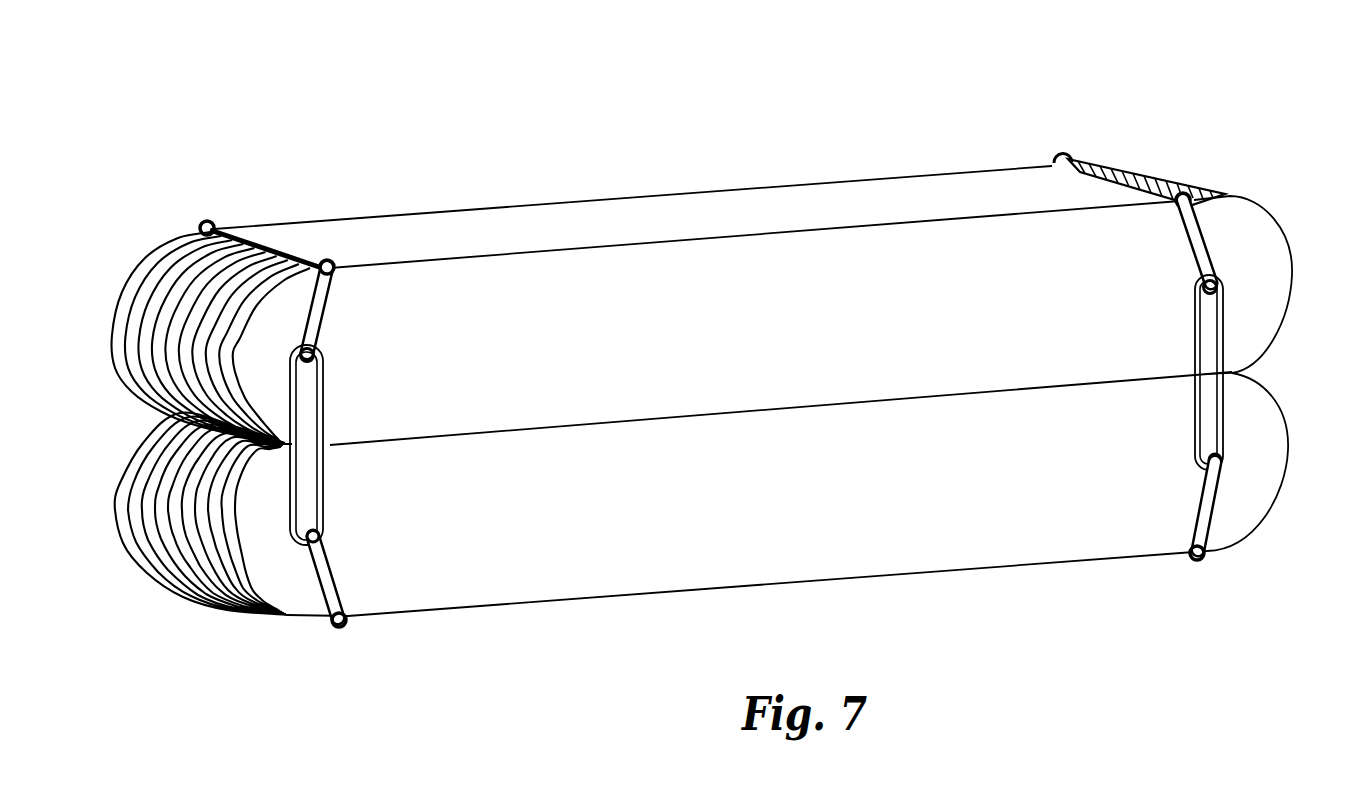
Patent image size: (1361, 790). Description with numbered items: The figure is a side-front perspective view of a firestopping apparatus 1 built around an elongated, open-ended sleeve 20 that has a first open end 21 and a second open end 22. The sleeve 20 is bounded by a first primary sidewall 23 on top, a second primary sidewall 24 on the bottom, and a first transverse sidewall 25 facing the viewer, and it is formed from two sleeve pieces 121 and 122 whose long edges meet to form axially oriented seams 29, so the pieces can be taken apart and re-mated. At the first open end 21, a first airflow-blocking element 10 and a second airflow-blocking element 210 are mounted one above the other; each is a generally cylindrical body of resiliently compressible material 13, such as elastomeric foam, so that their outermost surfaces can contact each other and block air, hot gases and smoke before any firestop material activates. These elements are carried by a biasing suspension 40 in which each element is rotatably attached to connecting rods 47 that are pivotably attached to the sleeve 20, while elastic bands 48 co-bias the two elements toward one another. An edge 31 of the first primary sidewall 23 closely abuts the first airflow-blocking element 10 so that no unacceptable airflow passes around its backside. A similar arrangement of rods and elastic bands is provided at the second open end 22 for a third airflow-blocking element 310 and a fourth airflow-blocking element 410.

The firestopping apparatus 1 is at (1158, 86).
The first airflow-blocking element 10 is at (182, 333).
The resiliently compressible material 13 is at (113, 328).
The sleeve 20 is at (780, 371).
The first open end 21 is at (202, 543).
The second open end 22 is at (1288, 360).
The first primary sidewall 23 is at (876, 195).
The second primary sidewall 24 is at (947, 571).
The first transverse sidewall 25 is at (494, 588).
The seams 29 is at (402, 437).
The edge of sidewall 31 is at (233, 231).
The biasing suspension 40 is at (756, 384).
The connecting rods 47 is at (330, 577).
The elastic bands 48 is at (321, 405).
The sleeve piece 121 is at (651, 214).
The sleeve piece 122 is at (731, 568).
The second airflow-blocking element 210 is at (298, 600).
The third airflow-blocking element 310 is at (1248, 232).
The fourth airflow-blocking element 410 is at (1240, 523).